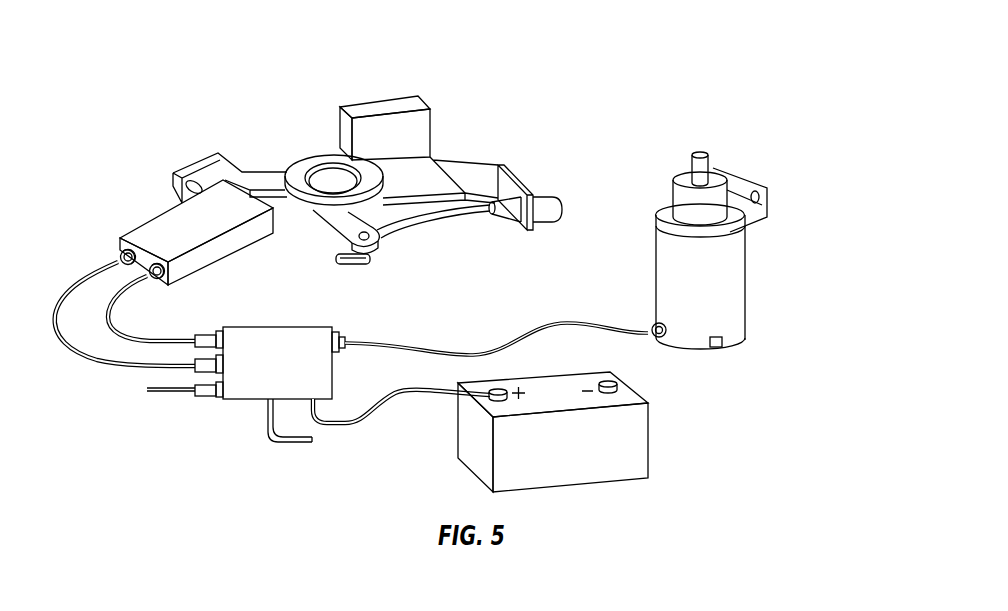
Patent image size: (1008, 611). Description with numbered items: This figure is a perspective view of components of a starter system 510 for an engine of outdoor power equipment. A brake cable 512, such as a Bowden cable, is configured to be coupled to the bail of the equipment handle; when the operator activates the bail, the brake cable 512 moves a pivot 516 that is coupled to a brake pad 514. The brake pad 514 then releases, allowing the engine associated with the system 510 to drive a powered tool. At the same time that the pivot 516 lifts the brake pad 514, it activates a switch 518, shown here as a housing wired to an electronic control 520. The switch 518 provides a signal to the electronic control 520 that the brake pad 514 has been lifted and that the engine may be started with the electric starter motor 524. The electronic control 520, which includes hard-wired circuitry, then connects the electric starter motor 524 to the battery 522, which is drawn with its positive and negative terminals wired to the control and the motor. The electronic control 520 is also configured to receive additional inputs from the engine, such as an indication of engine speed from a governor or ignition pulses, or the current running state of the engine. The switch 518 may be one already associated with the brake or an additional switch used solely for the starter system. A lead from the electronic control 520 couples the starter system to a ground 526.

The system 510 is at (616, 54).
The brake cable 512 is at (482, 215).
The brake pad 514 is at (402, 107).
The pivot 516 is at (328, 170).
The switch 518 is at (158, 228).
The electronic control 520 is at (247, 392).
The battery 522 is at (467, 433).
The electric starter motor 524 is at (733, 277).
The ground 526 is at (300, 444).